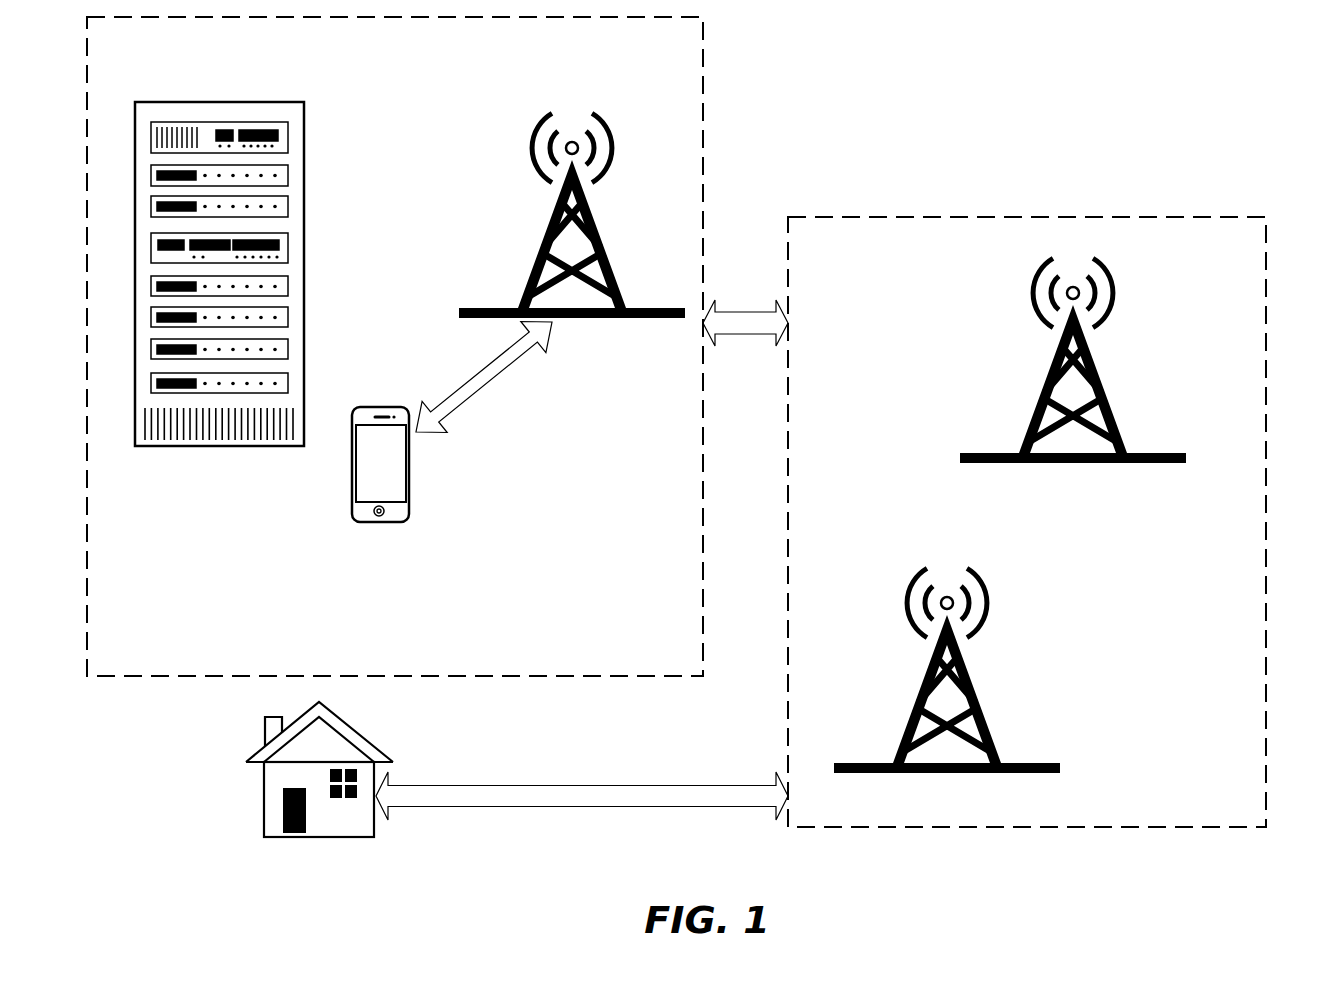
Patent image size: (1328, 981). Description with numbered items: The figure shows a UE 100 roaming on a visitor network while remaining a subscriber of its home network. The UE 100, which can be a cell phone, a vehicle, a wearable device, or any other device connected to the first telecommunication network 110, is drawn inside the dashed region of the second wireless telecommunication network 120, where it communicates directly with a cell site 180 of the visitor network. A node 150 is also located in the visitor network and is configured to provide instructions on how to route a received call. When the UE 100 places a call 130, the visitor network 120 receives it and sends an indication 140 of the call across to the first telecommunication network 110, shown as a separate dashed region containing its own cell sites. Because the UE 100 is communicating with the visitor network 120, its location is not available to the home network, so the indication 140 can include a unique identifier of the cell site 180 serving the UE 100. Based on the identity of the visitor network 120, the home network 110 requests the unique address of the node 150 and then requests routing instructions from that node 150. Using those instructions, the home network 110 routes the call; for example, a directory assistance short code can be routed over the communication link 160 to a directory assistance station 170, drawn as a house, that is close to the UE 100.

The UE 100 is at (352, 517).
The first telecommunication network 110 is at (1267, 252).
The second wireless telecommunication network 120 is at (704, 92).
The call 130 is at (445, 390).
The indication of the call 140 is at (762, 312).
The node 150 is at (213, 101).
The communication link 160 is at (1108, 393).
The directory assistance station 170 is at (264, 824).
The cell site 180 is at (525, 307).